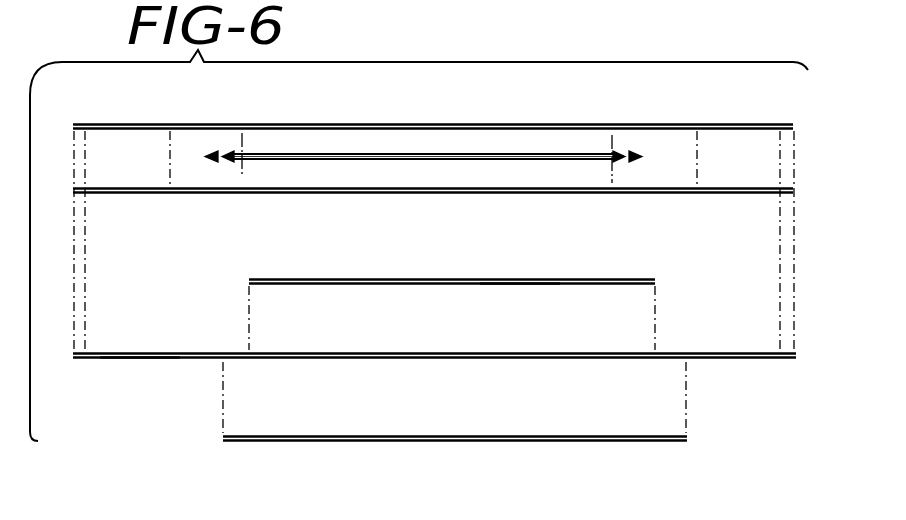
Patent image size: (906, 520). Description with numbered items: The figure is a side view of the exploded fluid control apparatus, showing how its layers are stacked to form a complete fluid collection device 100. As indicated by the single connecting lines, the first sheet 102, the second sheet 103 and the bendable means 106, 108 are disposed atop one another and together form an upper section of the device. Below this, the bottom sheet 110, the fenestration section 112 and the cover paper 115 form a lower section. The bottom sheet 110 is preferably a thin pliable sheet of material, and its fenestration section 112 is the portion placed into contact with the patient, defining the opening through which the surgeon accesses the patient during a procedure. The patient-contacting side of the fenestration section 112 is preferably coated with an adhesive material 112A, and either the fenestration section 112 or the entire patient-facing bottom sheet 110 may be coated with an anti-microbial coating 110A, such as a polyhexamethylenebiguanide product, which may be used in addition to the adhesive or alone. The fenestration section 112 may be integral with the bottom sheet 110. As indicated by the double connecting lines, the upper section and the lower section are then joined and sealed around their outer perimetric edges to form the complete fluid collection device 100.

The fluid collection device 100 is at (143, 440).
The first sheet 102 is at (149, 123).
The second sheet 103 is at (117, 194).
The bendable means 106 is at (636, 156).
The bendable means 108 is at (621, 156).
The bottom sheet 110 is at (167, 351).
The anti-microbial coating 110A is at (147, 359).
The fenestration section 112 is at (600, 279).
The adhesive material 112A is at (552, 285).
The cover paper 115 is at (245, 442).